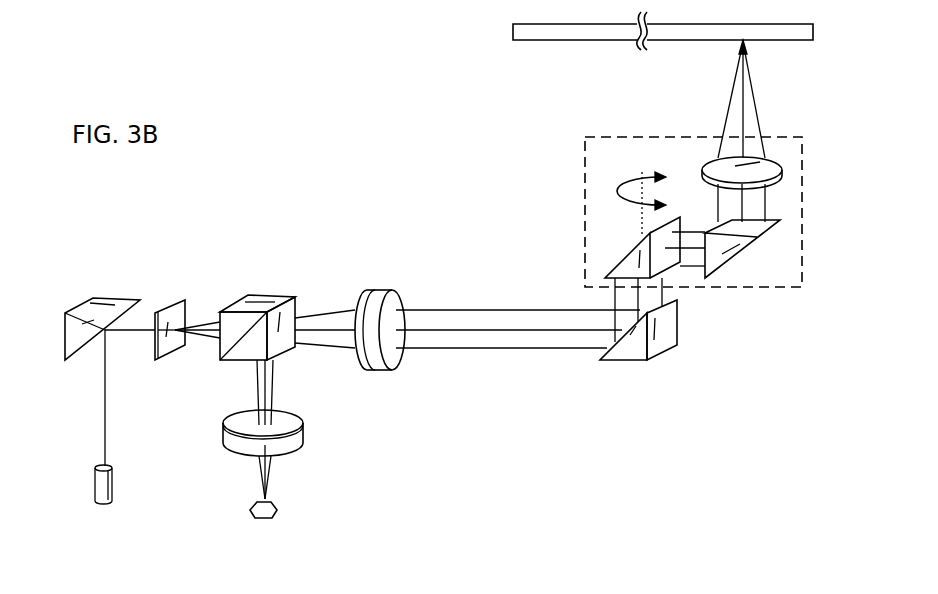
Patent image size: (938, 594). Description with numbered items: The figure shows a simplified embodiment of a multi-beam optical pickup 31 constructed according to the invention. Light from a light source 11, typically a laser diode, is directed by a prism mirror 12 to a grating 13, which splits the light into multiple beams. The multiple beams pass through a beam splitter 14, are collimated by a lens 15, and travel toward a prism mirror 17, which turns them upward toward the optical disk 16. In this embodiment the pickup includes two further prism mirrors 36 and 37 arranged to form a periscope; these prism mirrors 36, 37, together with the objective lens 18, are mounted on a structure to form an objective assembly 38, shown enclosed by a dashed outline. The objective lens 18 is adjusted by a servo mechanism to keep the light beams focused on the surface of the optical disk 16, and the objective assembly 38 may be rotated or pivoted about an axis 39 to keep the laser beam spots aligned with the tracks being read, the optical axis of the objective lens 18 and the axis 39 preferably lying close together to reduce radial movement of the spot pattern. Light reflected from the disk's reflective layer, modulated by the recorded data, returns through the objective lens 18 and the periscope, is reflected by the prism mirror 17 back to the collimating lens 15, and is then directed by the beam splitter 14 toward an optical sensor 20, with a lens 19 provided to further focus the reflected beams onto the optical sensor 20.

The light source 11 is at (95, 480).
The prism mirror 12 is at (98, 297).
The grating 13 is at (185, 297).
The beam splitter 14 is at (273, 295).
The lens 15 is at (373, 290).
The optical disk 16 is at (573, 40).
The prism mirror 17 is at (657, 353).
The objective lens 18 is at (780, 172).
The lens 19 is at (302, 433).
The optical sensor 20 is at (278, 509).
The optical pickup 31 is at (386, 86).
The prism mirror 36 is at (618, 265).
The prism mirror 37 is at (750, 257).
The objective assembly 38 is at (800, 222).
The axis 39 is at (642, 172).